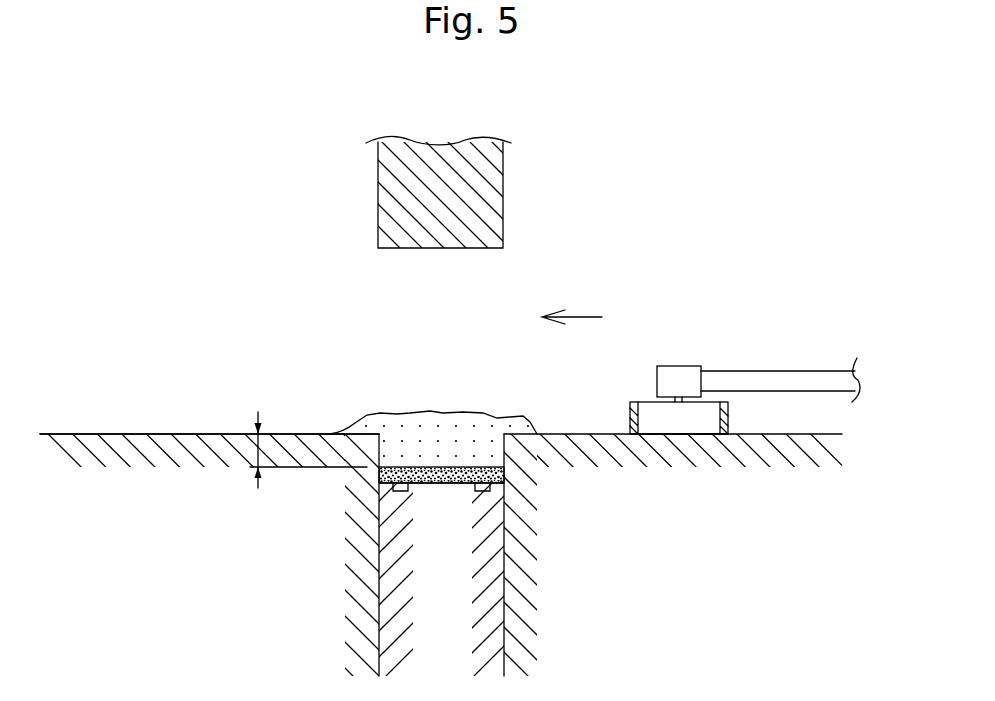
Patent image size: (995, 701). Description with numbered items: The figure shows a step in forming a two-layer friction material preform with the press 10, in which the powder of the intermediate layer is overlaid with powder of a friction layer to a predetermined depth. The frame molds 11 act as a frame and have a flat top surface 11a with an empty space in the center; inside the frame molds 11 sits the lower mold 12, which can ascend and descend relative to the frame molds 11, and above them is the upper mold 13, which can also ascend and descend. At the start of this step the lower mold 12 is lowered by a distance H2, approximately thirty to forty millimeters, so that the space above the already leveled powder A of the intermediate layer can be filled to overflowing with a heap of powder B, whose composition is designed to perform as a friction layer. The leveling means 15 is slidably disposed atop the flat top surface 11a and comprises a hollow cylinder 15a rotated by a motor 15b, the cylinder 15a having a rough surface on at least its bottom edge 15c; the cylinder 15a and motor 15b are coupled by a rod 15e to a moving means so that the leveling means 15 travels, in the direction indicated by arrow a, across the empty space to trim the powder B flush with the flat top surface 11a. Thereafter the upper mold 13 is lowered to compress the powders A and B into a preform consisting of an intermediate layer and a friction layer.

The press 10 is at (280, 272).
The frame molds 11 is at (268, 564).
The flat top surface 11a is at (133, 434).
The lower mold 12 is at (485, 561).
The upper mold 13 is at (503, 191).
The leveling means 15 is at (703, 380).
The hollow cylinder 15a is at (630, 404).
The motor 15b is at (675, 366).
The bottom edge 15c is at (637, 434).
The rod 15e is at (787, 371).
The powder A is at (445, 484).
The powder B is at (481, 410).
The distance H2 is at (258, 434).
The movement direction a is at (561, 319).